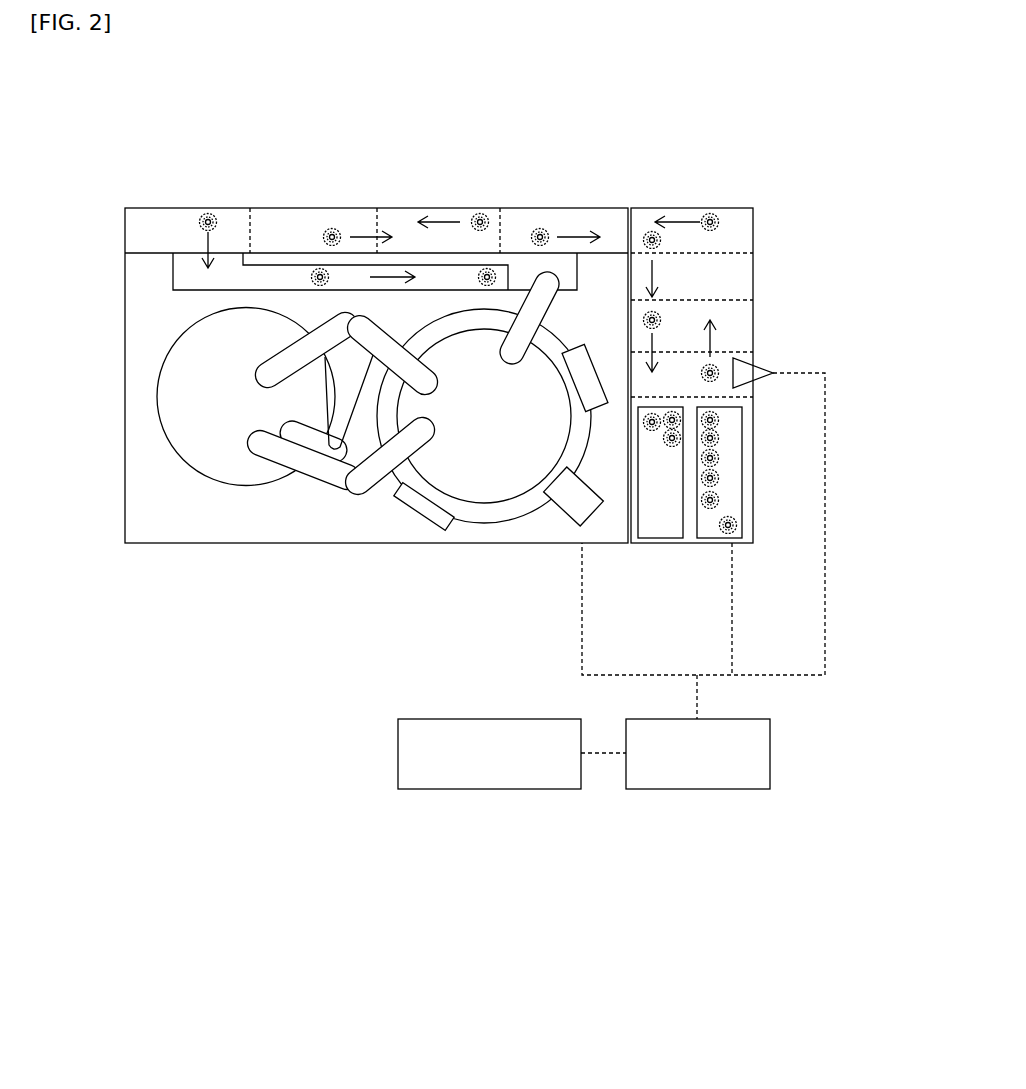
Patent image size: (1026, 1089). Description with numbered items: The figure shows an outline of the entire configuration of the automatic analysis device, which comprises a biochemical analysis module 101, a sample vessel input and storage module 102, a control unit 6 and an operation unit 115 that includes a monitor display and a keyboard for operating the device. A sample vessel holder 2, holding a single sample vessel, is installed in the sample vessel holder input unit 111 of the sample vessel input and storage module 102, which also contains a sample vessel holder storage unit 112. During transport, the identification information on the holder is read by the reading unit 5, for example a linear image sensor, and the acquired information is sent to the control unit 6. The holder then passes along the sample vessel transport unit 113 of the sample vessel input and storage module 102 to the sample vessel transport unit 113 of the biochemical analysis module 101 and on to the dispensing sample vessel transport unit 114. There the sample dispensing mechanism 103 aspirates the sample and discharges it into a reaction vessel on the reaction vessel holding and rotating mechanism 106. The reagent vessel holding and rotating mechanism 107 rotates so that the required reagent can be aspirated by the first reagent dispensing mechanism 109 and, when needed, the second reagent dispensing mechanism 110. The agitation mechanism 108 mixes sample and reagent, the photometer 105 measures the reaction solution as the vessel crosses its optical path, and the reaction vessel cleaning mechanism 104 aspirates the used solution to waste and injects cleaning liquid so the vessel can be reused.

The sample vessel holder 2 is at (540, 229).
The reading unit 5 is at (735, 358).
The control unit 6 is at (682, 789).
The biochemical analysis module 101 is at (160, 547).
The sample vessel input and storage module 102 is at (735, 207).
The sample dispensing mechanism 103 is at (537, 288).
The reaction vessel cleaning mechanism 104 is at (581, 345).
The photometer 105 is at (563, 515).
The reaction vessel holding and rotating mechanism 106 is at (510, 520).
The reagent vessel holding and rotating mechanism 107 is at (500, 483).
The agitation mechanism 108 is at (407, 502).
The first reagent dispensing mechanism 109 is at (362, 487).
The second reagent dispensing mechanism 110 is at (258, 440).
The sample vessel holder input unit 111 is at (722, 540).
The sample vessel holder storage unit 112 is at (657, 540).
The sample vessel transport unit 113 is at (387, 207).
The dispensing sample vessel transport unit 114 is at (305, 263).
The operation unit 115 is at (520, 789).